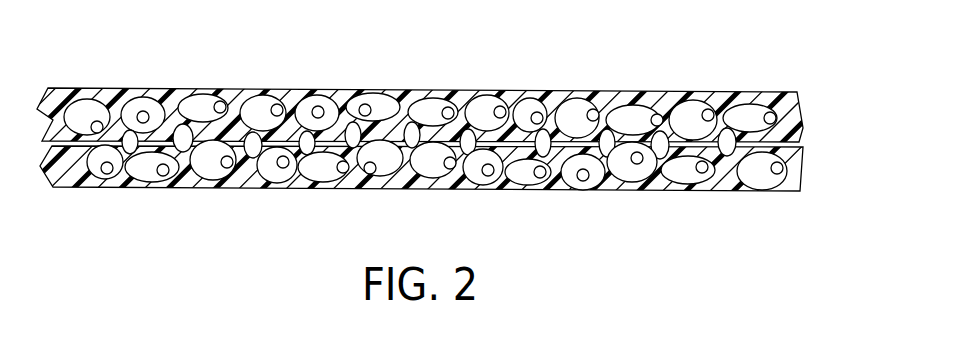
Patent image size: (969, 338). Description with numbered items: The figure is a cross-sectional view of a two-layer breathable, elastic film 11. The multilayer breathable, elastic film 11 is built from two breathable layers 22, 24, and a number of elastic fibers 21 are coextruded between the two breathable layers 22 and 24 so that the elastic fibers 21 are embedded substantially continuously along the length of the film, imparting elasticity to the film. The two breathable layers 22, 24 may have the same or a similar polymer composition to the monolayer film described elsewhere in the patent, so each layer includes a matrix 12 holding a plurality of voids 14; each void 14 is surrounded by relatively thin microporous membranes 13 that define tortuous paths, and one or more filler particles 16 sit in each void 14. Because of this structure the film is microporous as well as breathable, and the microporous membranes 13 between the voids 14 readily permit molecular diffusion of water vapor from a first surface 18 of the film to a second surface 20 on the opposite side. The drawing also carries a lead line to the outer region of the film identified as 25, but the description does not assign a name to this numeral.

The multilayer breathable, elastic film 11 is at (800, 177).
The first layer 25 is at (797, 103).
The first surface 18 is at (88, 88).
The breathable layer 22 is at (243, 88).
The microporous membrane 13 is at (433, 92).
The elastic fiber 21 is at (543, 136).
The matrix 12 is at (742, 93).
The second surface 20 is at (113, 187).
The breathable layer 24 is at (288, 187).
The void 14 is at (523, 176).
The filler particle 16 is at (541, 178).